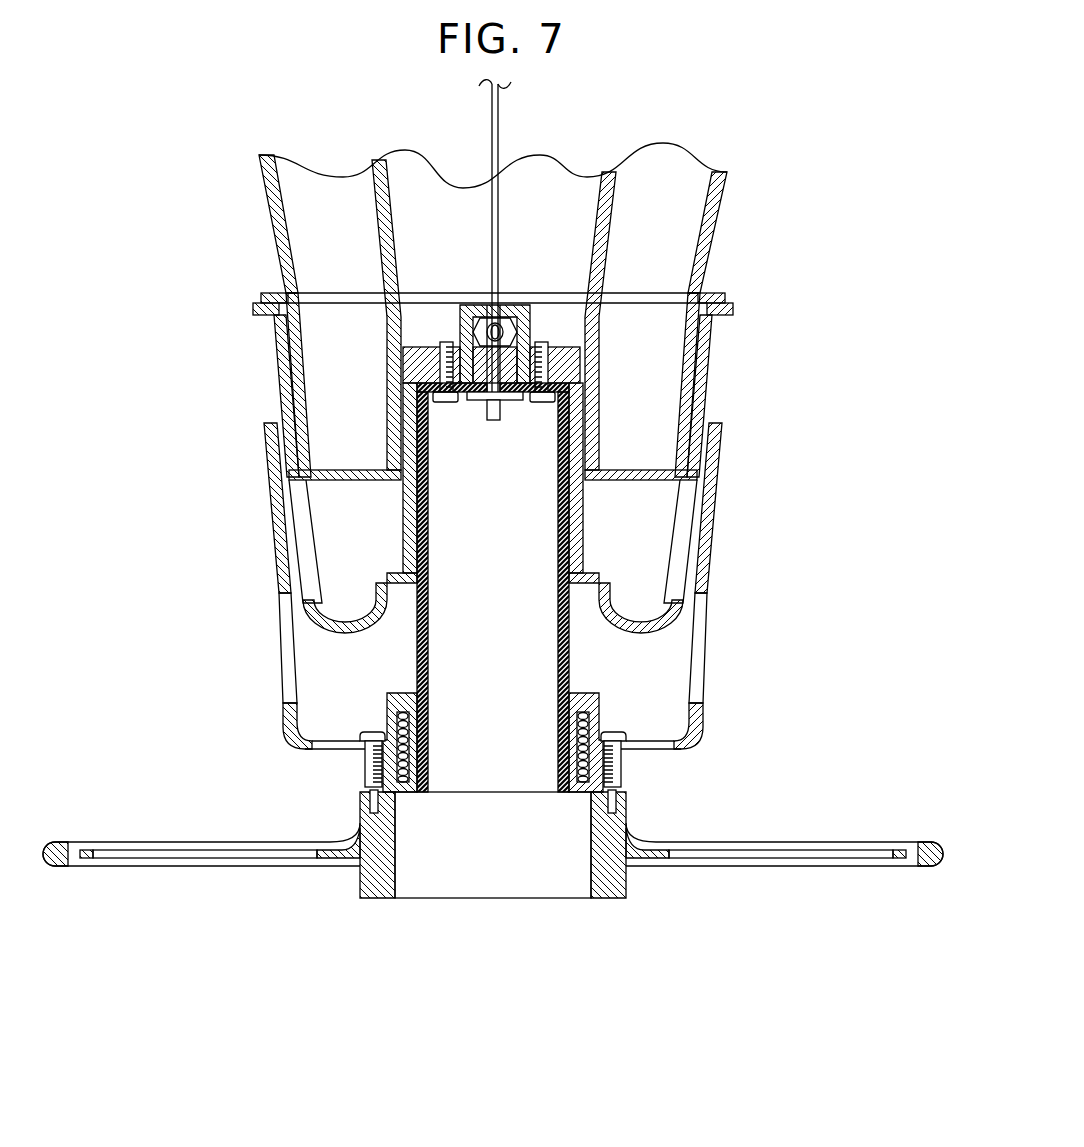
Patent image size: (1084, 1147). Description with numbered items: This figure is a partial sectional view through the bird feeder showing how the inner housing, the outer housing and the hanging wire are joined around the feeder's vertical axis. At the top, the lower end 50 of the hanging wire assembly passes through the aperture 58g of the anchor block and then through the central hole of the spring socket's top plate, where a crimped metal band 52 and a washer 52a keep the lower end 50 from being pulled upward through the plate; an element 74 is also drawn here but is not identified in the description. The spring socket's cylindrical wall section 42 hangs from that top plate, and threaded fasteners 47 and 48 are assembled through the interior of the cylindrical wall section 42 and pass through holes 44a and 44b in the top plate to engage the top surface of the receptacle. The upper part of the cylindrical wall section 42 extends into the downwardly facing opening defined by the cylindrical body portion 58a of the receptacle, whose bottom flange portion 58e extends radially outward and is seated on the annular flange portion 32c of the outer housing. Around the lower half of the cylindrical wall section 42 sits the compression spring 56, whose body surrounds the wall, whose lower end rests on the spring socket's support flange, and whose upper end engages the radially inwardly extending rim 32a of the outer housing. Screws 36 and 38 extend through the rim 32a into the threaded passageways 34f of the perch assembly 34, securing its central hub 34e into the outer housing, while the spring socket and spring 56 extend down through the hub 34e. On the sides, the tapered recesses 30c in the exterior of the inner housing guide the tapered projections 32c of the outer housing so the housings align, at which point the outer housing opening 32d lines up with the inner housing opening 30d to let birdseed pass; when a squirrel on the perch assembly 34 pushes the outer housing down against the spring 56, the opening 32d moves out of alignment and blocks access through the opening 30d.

The tapered recesses 30c is at (708, 347).
The inner housing opening 30d is at (683, 528).
The radially inwardly extending rim 32a is at (362, 742).
The tapered projections 32c is at (722, 484).
The outer housing opening 32d is at (700, 628).
The perch assembly 34 is at (819, 882).
The central hub 34e is at (610, 898).
The threaded passageways 34f is at (375, 800).
The screw 36 is at (370, 762).
The screw 38 is at (622, 764).
The cylindrical wall section 42 is at (417, 650).
The hole 44a is at (417, 387).
The hole 44b is at (569, 387).
The threaded fastener 47 is at (447, 330).
The threaded fastener 48 is at (560, 320).
The lower end of the hanging wire assembly 50 is at (560, 362).
The crimped metal band 52 is at (505, 414).
The washer 52a is at (477, 401).
The compression spring 56 is at (583, 715).
The cylindrical body portion 58a is at (407, 508).
The bottom flange portion 58e is at (338, 628).
The aperture 58g is at (497, 302).
The nut 74 is at (480, 317).